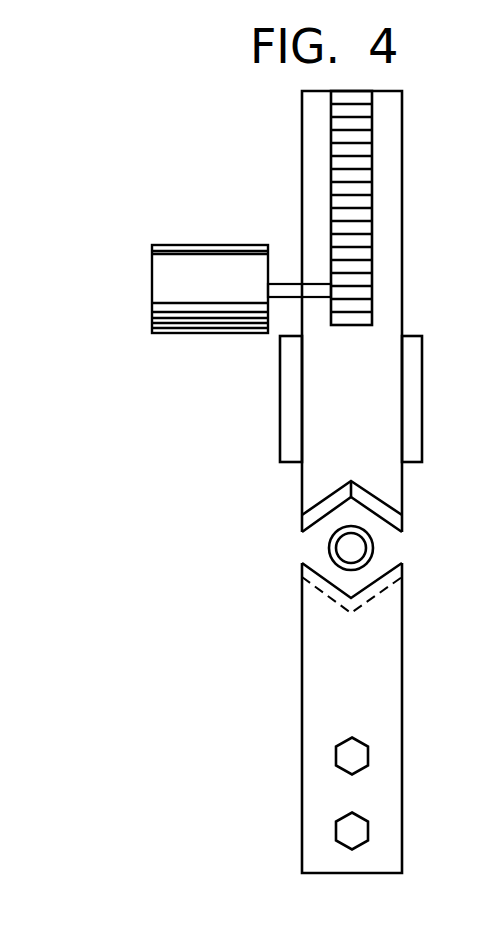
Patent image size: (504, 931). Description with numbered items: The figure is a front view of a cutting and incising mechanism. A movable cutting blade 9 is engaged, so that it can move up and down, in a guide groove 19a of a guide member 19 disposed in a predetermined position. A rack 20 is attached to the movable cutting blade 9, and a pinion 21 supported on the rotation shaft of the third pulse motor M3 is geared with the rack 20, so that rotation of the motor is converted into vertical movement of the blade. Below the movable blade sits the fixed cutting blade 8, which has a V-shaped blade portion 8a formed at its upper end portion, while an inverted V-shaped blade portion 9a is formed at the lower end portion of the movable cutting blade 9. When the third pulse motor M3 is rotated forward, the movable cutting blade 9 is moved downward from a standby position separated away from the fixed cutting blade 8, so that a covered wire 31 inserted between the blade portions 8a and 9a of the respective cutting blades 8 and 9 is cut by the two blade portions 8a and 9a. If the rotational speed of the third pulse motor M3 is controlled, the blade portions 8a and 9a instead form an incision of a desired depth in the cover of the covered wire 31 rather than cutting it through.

The third pulse motor M3 is at (221, 257).
The rack 20 is at (362, 191).
The pinion 21 is at (362, 287).
The guide member 19 is at (288, 398).
The guide groove 19a is at (400, 364).
The movable cutting blade 9 is at (390, 419).
The inverted V-shaped blade portion 9a is at (399, 531).
The V-shaped blade portion 8a is at (402, 569).
The fixed cutting blade 8 is at (385, 662).
The covered wire 31 is at (312, 550).